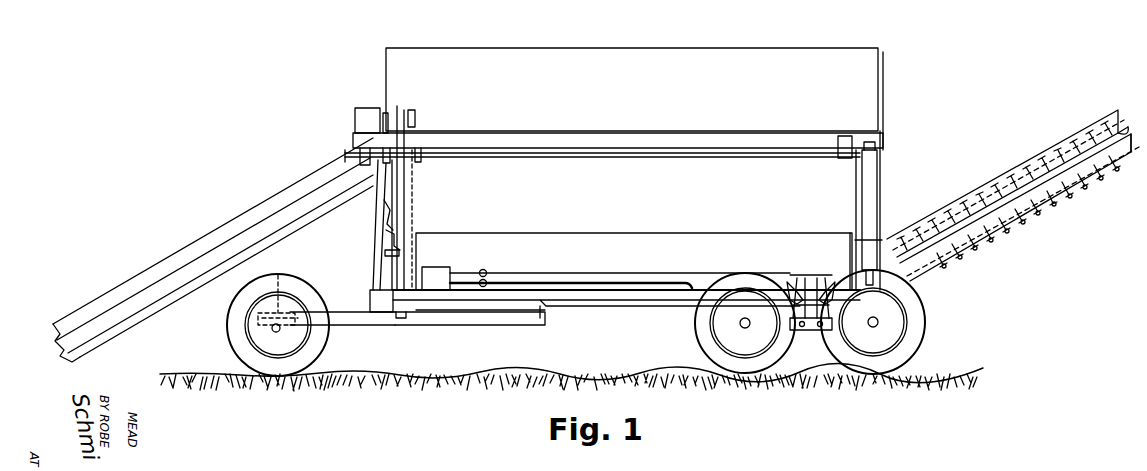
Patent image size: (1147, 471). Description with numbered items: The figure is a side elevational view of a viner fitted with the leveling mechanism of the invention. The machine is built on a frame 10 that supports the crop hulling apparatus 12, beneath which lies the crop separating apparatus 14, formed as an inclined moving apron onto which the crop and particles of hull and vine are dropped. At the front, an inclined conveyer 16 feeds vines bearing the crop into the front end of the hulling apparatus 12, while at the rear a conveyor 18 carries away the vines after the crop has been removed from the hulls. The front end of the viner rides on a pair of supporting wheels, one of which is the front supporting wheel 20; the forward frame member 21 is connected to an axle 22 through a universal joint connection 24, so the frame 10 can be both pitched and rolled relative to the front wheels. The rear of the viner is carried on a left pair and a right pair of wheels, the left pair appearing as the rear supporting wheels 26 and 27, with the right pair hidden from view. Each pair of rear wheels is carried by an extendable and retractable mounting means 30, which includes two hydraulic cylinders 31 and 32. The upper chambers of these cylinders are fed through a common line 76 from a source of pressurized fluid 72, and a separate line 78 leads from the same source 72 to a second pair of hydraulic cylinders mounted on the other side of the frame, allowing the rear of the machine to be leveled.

The frame 10 is at (588, 306).
The crop hulling apparatus 12 is at (595, 40).
The crop separating apparatus 14 is at (772, 231).
The inclined conveyer 16 is at (170, 258).
The conveyor 18 is at (975, 190).
The front supporting wheel 20 is at (317, 340).
The forward frame member 21 is at (362, 320).
The axle 22 is at (272, 330).
The universal joint connection 24 is at (281, 295).
The rear supporting wheel 26 is at (706, 340).
The rear supporting wheel 27 is at (916, 331).
The extendable and retractable mounting means 30 is at (815, 331).
The hydraulic cylinder 31 is at (786, 282).
The hydraulic cylinder 32 is at (824, 284).
The source of pressurized fluid 72 is at (437, 272).
The common line 76 is at (599, 283).
The separate line 78 is at (558, 273).